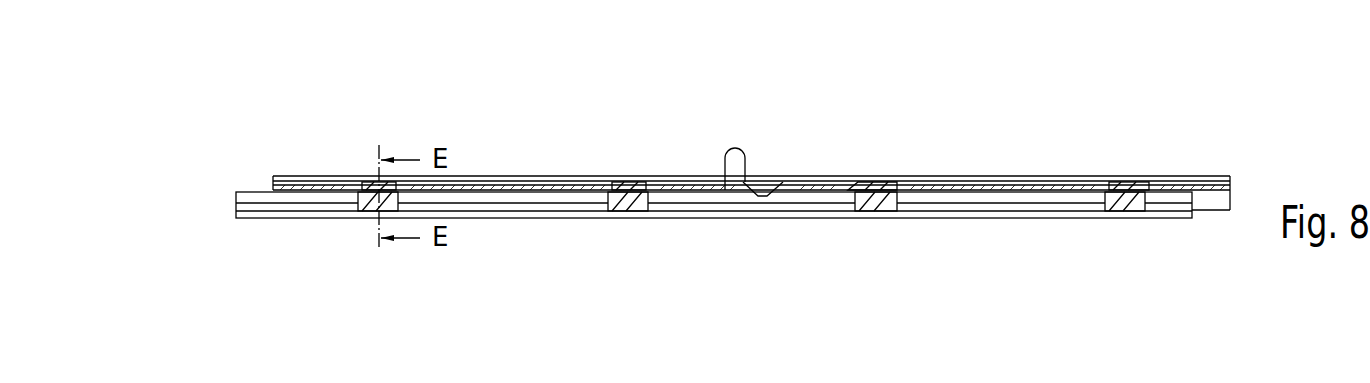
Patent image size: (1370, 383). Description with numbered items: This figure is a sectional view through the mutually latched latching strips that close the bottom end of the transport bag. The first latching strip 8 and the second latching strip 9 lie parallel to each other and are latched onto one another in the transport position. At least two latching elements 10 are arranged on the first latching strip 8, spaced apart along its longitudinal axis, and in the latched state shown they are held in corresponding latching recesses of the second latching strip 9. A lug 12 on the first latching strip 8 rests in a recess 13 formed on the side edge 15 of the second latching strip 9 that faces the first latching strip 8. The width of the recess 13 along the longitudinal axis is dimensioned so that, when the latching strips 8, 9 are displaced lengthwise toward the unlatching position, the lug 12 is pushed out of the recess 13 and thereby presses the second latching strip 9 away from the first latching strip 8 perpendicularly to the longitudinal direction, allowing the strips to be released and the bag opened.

The first latching strip 8 is at (538, 160).
The second latching strip 9 is at (252, 195).
The latching element 10 is at (625, 198).
The lug 12 is at (762, 194).
The recess 13 is at (725, 190).
The side edge 15 is at (690, 178).